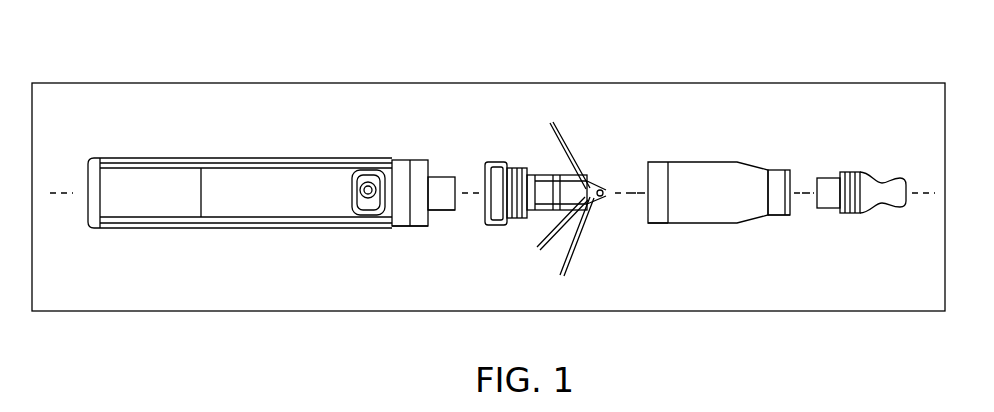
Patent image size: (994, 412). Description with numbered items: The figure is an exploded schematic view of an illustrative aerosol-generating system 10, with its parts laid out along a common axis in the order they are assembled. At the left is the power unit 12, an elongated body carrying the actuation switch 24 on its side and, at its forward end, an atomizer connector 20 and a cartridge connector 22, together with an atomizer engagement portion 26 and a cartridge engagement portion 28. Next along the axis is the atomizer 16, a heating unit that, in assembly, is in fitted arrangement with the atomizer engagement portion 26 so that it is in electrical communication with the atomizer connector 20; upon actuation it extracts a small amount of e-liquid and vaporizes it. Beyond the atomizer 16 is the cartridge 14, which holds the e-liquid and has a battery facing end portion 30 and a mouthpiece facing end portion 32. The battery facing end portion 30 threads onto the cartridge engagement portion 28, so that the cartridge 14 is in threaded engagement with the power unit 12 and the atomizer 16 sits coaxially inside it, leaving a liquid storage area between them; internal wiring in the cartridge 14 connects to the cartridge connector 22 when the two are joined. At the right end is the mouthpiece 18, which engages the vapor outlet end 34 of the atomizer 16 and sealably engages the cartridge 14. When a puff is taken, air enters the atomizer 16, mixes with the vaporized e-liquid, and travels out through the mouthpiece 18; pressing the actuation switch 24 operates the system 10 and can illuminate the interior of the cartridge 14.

The aerosol-generating system 10 is at (130, 80).
The power unit 12 is at (246, 154).
The cartridge 14 is at (694, 156).
The atomizer 16 is at (496, 160).
The mouthpiece 18 is at (833, 172).
The atomizer connector 20 is at (455, 177).
The cartridge connector 22 is at (428, 176).
The actuation switch 24 is at (355, 190).
The atomizer engagement portion 26 is at (441, 212).
The cartridge engagement portion 28 is at (428, 215).
The battery facing end portion 30 is at (647, 212).
The mouthpiece facing end portion 32 is at (790, 215).
The vapor outlet end 34 is at (607, 185).